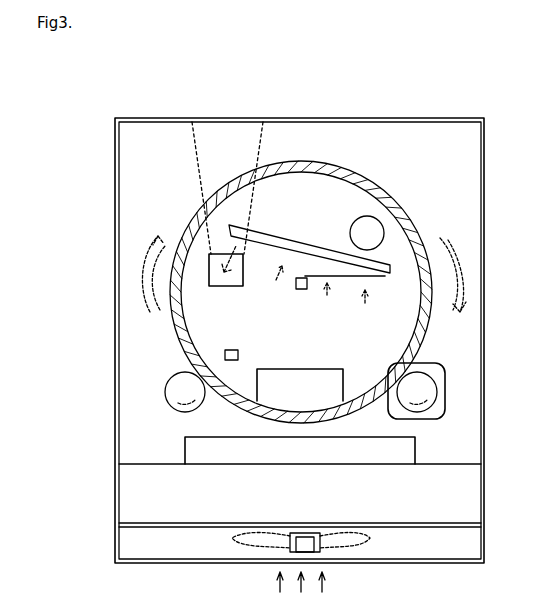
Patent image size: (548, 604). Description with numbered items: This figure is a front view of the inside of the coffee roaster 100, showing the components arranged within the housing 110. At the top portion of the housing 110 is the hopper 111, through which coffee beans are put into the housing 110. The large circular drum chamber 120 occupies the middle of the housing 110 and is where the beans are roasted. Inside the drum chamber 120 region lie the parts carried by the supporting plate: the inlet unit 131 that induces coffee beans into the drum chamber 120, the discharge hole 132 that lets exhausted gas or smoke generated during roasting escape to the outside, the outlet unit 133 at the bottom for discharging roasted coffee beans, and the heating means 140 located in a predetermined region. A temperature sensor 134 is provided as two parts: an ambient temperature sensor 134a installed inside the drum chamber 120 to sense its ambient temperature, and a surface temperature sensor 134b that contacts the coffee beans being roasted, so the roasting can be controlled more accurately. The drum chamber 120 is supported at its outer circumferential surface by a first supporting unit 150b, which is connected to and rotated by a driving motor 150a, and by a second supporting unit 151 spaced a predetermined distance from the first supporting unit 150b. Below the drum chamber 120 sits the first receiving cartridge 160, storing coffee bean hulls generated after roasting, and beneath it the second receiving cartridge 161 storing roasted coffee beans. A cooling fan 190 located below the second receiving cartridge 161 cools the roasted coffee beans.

The coffee roaster 100 is at (101, 73).
The housing 110 is at (386, 118).
The hopper 111 is at (248, 130).
The drum chamber 120 is at (193, 222).
The inlet unit 131 is at (224, 288).
The discharge hole 132 is at (350, 229).
The outlet unit 133 is at (343, 376).
The temperature sensor 134 is at (171, 324).
The ambient temperature sensor 134a is at (297, 290).
The surface temperature sensor 134b is at (225, 355).
The heating means 140 is at (390, 274).
The driving motor 150a is at (442, 398).
The first supporting unit 150b is at (423, 383).
The second supporting unit 151 is at (168, 392).
The first receiving cartridge 160 is at (185, 450).
The second receiving cartridge 161 is at (145, 492).
The cooling fan 190 is at (150, 537).